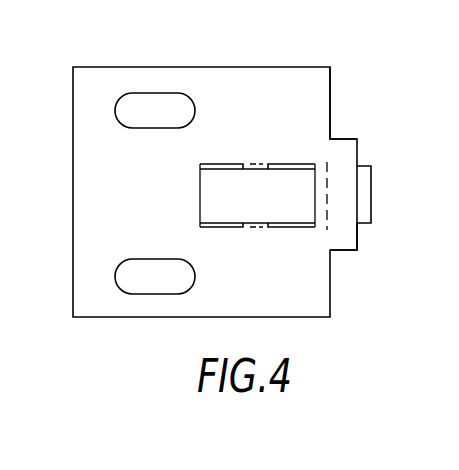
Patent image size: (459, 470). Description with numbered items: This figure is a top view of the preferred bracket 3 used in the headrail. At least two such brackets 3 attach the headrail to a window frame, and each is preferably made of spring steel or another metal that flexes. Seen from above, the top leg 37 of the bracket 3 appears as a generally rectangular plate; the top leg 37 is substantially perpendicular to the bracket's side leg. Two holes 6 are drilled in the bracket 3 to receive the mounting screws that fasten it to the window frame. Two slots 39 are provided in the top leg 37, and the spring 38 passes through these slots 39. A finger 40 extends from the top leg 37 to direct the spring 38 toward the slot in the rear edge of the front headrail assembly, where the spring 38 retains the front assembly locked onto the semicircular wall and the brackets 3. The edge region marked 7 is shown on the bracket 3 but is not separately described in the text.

The bracket 3 is at (90, 175).
The holes 6 is at (143, 282).
The plate side edge 7 is at (332, 108).
The top leg 37 is at (257, 162).
The spring 38 is at (372, 203).
The slots 39 is at (229, 228).
The finger 40 is at (343, 252).